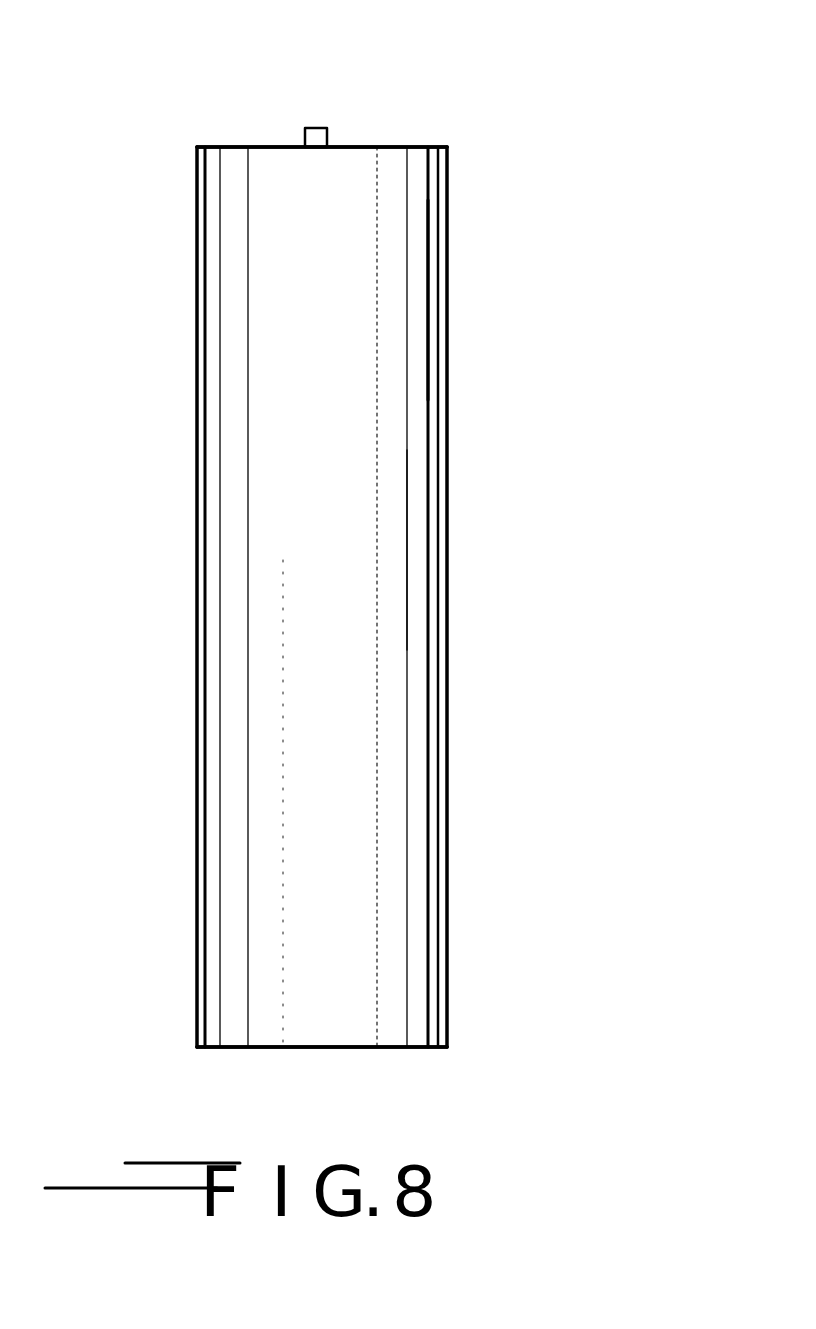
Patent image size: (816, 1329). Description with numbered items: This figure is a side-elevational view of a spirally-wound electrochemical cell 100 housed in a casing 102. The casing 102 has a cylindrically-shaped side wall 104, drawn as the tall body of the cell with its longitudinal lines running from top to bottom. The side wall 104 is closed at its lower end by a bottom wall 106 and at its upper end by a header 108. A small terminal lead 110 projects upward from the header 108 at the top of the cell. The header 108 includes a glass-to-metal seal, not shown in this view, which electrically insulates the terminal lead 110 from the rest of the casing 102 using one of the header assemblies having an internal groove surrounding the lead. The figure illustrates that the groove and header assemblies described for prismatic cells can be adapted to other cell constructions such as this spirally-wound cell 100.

The spirally-wound electrochemical cell 100 is at (478, 188).
The casing 102 is at (423, 317).
The side wall 104 is at (420, 560).
The bottom wall 106 is at (250, 1047).
The header 108 is at (233, 147).
The terminal lead 110 is at (327, 127).